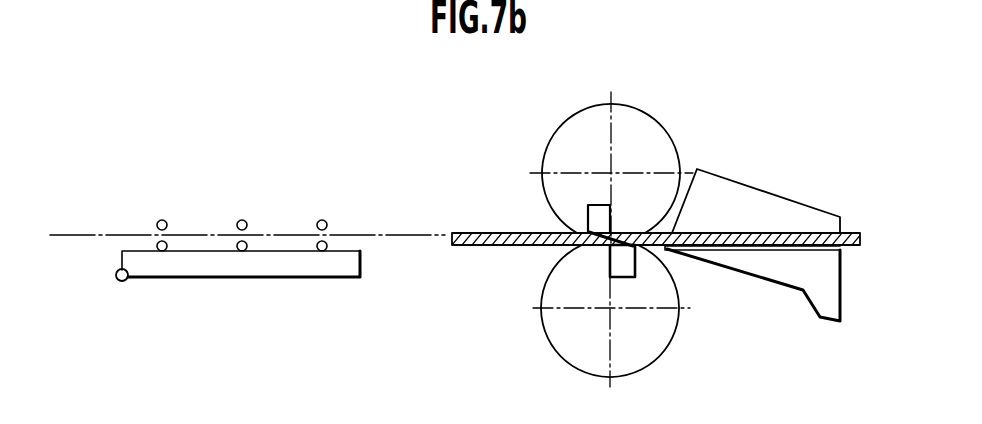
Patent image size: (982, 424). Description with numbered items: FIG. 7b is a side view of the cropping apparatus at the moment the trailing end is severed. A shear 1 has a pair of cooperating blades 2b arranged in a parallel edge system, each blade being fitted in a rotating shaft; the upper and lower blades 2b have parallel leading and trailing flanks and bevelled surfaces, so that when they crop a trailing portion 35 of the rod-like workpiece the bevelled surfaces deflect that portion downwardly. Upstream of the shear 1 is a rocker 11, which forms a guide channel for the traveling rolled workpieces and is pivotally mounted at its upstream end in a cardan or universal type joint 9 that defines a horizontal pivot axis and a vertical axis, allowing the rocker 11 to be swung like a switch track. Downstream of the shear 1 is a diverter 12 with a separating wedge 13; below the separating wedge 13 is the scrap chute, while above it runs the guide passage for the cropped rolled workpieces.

The shear 1 is at (667, 130).
The blades 2b is at (597, 212).
The cardan or universal type joint 9 is at (118, 281).
The rocker 11 is at (228, 268).
The diverter 12 is at (725, 197).
The separating wedge 13 is at (793, 234).
The trailing end portion 35 is at (489, 233).